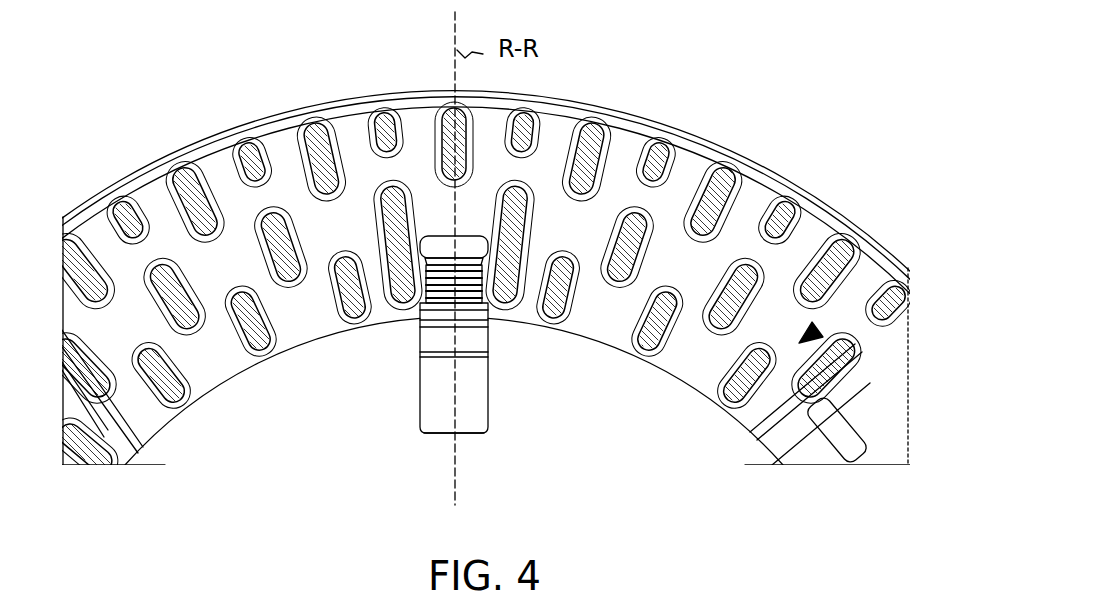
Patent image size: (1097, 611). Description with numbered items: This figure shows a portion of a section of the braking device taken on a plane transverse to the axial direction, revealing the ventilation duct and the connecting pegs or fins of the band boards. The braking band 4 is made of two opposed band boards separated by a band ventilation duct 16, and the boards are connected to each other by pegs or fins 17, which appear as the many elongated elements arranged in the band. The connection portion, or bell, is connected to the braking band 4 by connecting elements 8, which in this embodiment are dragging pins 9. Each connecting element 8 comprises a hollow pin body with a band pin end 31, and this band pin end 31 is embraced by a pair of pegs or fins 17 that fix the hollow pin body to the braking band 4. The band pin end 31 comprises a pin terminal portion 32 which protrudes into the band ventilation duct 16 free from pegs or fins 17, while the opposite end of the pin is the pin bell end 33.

The braking band 4 is at (678, 187).
The connecting elements 8 is at (466, 280).
The dragging pins 9 is at (427, 383).
The band ventilation duct 16 is at (863, 243).
The pegs or fins 17 is at (340, 120).
The band pin end 31 is at (425, 290).
The pin terminal portion 32 is at (467, 243).
The pin bell end 33 is at (442, 430).